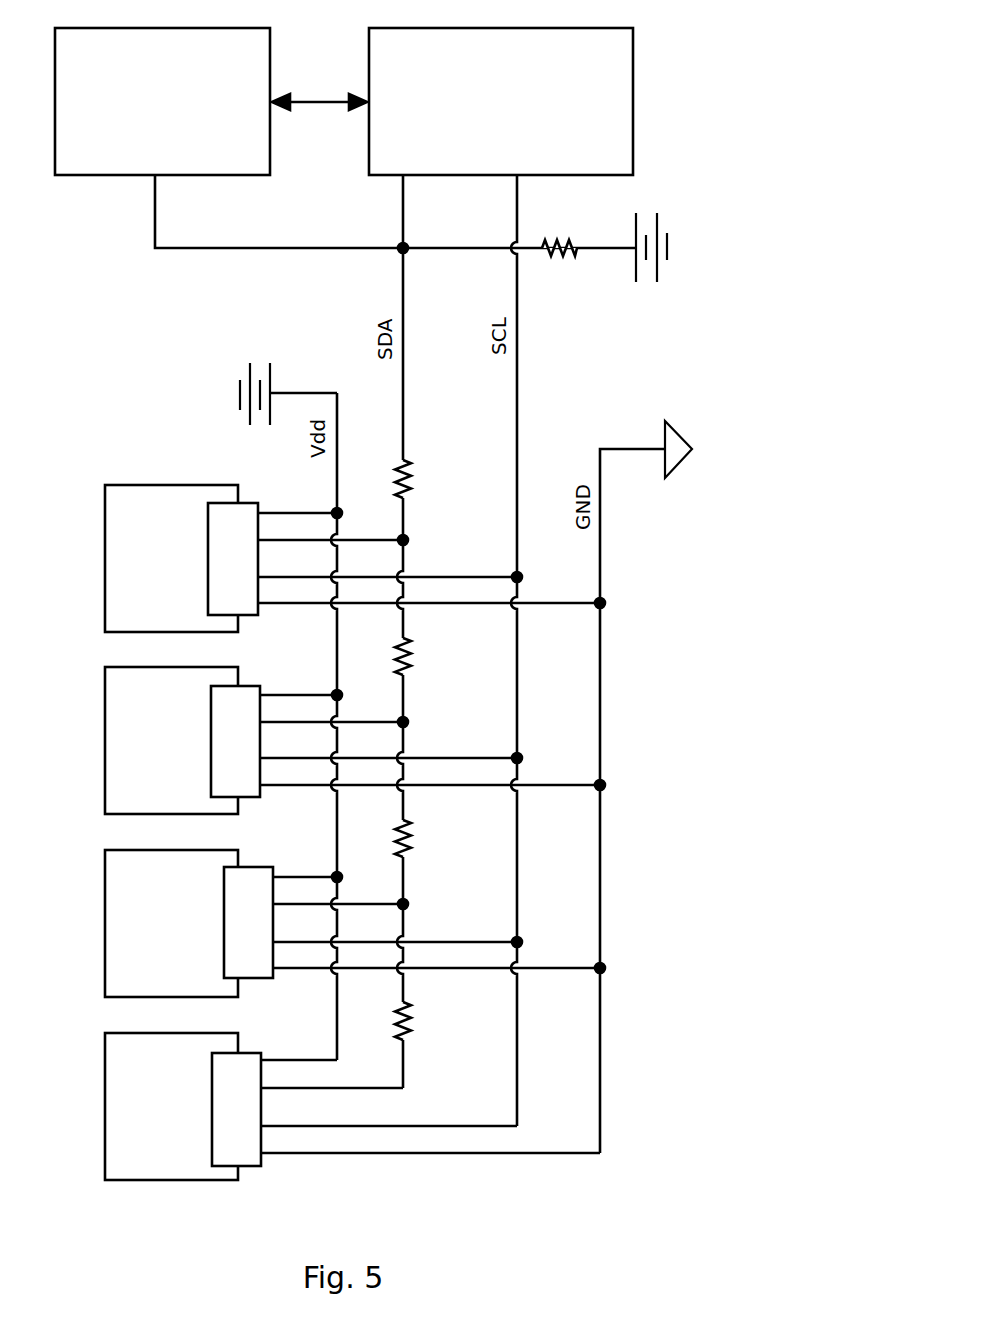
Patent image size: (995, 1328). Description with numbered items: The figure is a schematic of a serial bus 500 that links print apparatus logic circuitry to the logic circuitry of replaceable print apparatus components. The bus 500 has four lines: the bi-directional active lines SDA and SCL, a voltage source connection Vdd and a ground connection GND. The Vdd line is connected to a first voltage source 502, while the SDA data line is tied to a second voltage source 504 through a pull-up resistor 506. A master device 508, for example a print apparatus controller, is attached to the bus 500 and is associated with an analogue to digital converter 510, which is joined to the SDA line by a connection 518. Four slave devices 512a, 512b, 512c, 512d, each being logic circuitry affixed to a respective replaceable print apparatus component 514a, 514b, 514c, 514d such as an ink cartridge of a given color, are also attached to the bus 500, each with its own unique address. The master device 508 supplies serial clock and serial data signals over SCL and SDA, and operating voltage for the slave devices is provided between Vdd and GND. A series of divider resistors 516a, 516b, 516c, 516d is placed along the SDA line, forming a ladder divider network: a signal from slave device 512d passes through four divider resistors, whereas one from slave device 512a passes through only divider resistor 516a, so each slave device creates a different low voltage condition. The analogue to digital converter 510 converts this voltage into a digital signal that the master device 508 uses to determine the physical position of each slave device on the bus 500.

The serial bus 500 is at (579, 1156).
The first voltage source 502 is at (248, 370).
The second voltage source 504 is at (657, 225).
The pull-up resistor 506 is at (560, 256).
The master device 508 is at (501, 101).
The analogue to digital converter 510 is at (162, 101).
The slave device 512a is at (406, 559).
The slave device 512b is at (408, 741).
The slave device 512c is at (414, 922).
The slave device 512d is at (406, 1109).
The replaceable print apparatus component 514a is at (171, 558).
The replaceable print apparatus component 514b is at (171, 740).
The replaceable print apparatus component 514c is at (171, 923).
The replaceable print apparatus component 514d is at (171, 1106).
The divider resistor 516a is at (410, 470).
The divider resistor 516b is at (410, 652).
The divider resistor 516c is at (410, 834).
The divider resistor 516d is at (410, 1016).
The connection 518 is at (240, 250).